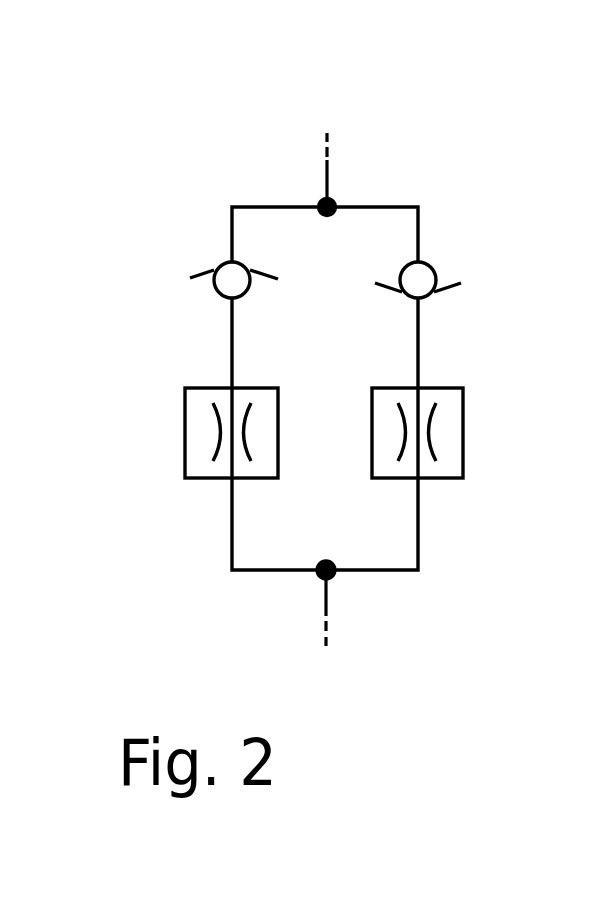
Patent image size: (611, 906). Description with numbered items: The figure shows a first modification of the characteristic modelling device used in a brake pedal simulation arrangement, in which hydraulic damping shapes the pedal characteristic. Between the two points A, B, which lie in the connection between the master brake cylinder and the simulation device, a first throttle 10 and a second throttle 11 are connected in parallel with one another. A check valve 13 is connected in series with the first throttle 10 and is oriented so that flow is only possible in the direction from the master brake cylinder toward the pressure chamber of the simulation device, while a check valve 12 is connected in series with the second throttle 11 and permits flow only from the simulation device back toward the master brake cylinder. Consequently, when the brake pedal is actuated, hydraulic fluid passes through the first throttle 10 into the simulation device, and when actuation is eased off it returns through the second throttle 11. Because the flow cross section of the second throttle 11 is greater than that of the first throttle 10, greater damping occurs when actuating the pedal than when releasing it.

The first throttle 10 is at (185, 402).
The second throttle 11 is at (463, 398).
The check valve 12 is at (418, 280).
The check valve 13 is at (232, 280).
The point A is at (336, 201).
The point B is at (314, 580).